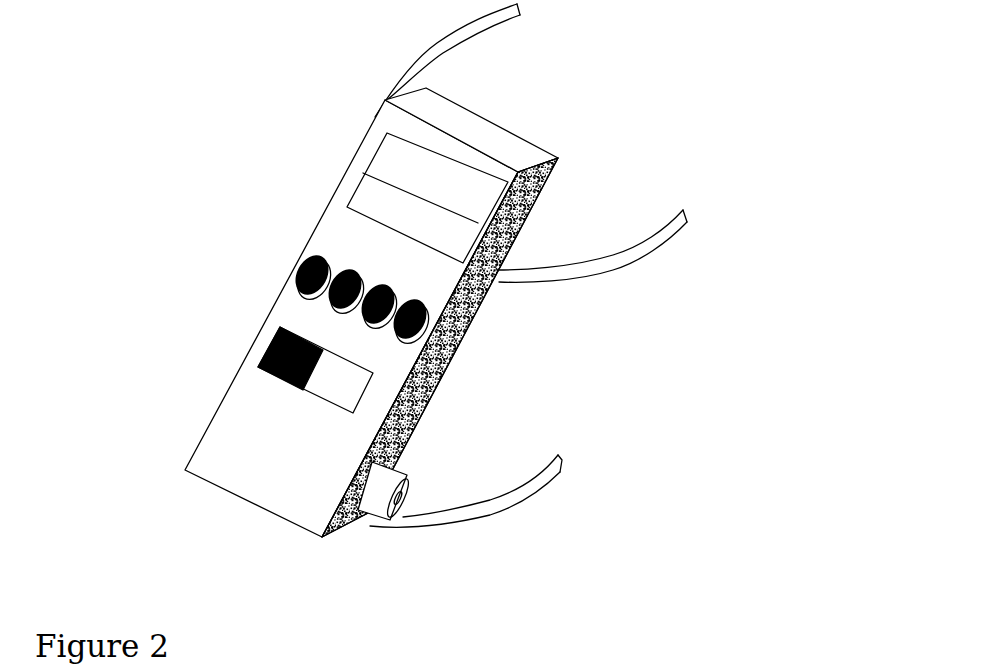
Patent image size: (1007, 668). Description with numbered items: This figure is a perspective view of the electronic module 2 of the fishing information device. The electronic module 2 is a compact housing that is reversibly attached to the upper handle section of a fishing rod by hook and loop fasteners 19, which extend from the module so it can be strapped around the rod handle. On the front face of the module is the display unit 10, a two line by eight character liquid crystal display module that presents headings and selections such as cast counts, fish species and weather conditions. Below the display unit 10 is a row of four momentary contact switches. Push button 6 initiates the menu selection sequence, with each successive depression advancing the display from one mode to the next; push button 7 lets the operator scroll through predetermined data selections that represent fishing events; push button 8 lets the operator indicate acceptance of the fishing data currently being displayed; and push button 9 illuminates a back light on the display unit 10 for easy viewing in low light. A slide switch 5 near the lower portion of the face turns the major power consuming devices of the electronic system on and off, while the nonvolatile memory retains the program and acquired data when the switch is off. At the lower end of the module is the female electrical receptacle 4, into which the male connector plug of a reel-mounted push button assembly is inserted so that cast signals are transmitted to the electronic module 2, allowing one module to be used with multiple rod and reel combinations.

The electronic module 2 is at (513, 270).
The female electrical receptacle 4 is at (398, 512).
The slide switch 5 is at (258, 363).
The push button 6 is at (292, 276).
The push button 7 is at (305, 269).
The push button 8 is at (320, 262).
The push button 9 is at (342, 261).
The display unit 10 is at (487, 192).
The hook and loop fasteners 19 is at (488, 526).